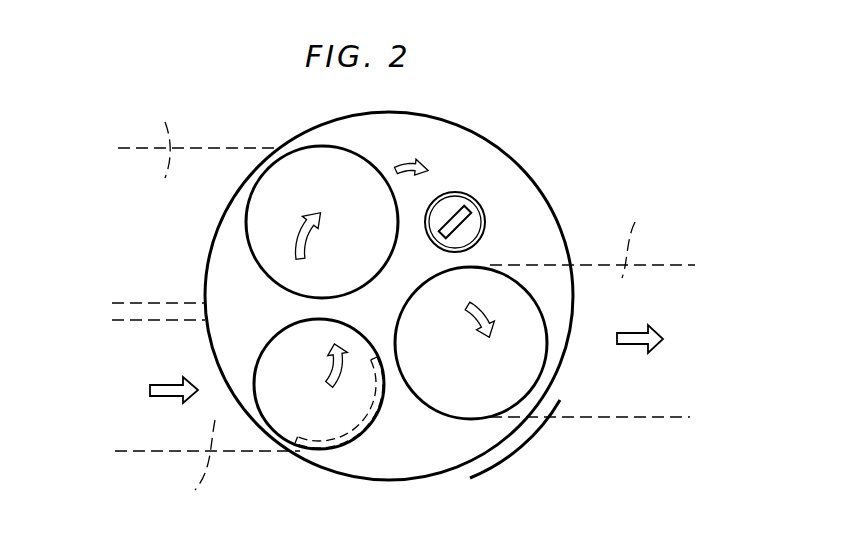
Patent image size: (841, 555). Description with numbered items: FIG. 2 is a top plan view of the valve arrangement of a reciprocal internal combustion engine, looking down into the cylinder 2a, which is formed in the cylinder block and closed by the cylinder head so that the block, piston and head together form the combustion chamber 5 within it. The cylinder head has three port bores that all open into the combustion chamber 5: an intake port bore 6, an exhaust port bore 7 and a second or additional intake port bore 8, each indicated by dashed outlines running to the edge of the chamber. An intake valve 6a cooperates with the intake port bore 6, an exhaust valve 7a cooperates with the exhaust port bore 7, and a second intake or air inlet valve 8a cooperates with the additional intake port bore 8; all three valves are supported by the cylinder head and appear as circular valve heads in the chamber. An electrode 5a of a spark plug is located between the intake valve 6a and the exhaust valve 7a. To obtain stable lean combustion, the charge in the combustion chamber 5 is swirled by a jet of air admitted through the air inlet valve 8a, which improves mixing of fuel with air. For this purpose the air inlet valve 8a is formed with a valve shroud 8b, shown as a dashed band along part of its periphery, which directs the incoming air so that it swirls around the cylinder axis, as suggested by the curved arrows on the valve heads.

The cylinder 2a is at (462, 127).
The combustion chamber 5 is at (445, 448).
The electrode of a spark plug 5a is at (485, 226).
The intake port bore 6 is at (163, 108).
The intake valve 6a is at (302, 172).
The exhaust port bore 7 is at (665, 214).
The exhaust valve 7a is at (505, 372).
The additional intake port bore 8 is at (178, 505).
The air inlet valve 8a is at (315, 420).
The valve shroud 8b is at (362, 405).